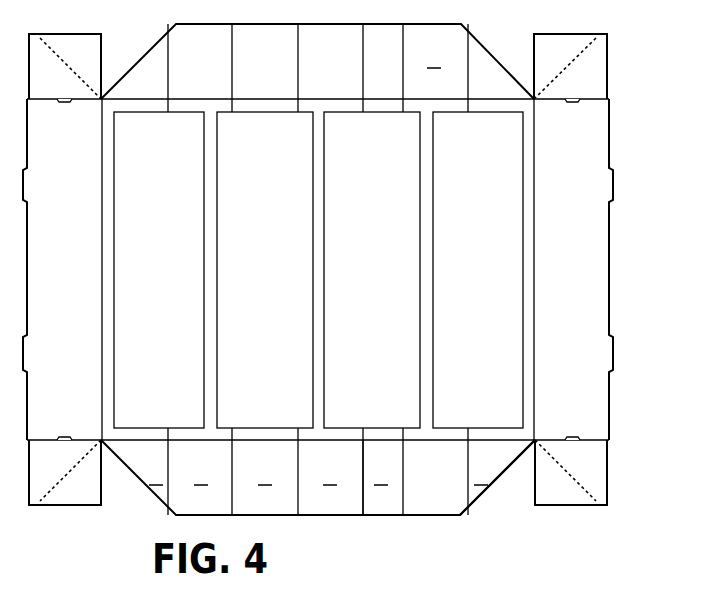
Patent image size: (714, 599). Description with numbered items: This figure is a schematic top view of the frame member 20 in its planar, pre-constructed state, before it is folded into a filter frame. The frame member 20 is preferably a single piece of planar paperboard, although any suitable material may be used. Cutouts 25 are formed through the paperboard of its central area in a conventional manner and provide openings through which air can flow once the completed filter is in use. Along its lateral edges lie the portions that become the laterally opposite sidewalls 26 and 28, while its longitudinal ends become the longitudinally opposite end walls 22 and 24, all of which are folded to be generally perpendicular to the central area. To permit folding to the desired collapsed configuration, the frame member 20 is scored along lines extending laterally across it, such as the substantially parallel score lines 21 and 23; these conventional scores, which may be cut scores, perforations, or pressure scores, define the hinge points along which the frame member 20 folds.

The frame member 20 is at (351, 292).
The score line 21 is at (367, 505).
The end wall 22 is at (52, 277).
The score line 23 is at (470, 491).
The end wall 24 is at (557, 277).
The cutouts 25 is at (185, 285).
The sidewall 26 is at (423, 485).
The sidewall 28 is at (314, 68).